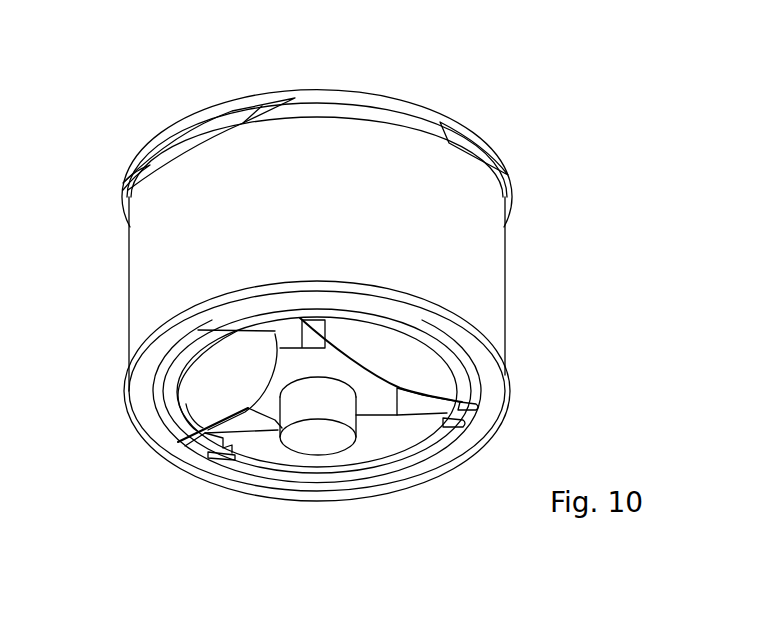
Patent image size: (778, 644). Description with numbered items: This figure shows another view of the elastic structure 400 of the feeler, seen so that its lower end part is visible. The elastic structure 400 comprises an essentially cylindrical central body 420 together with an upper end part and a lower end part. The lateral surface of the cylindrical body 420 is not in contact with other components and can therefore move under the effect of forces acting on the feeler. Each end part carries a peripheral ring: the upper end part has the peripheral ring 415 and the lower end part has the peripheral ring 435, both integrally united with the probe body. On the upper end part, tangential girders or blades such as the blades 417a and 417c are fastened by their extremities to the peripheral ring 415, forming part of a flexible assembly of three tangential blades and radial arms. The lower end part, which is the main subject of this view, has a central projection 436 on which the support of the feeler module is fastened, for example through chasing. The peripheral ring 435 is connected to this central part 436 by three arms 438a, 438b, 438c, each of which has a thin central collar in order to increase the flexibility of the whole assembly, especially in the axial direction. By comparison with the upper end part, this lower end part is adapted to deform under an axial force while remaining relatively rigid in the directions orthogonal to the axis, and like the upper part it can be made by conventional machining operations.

The elastic structure 400 is at (459, 86).
The peripheral ring 415 is at (137, 148).
The tangential blade 417a is at (452, 130).
The tangential blade 417c is at (258, 102).
The cylindrical central body 420 is at (128, 268).
The peripheral ring 435 is at (487, 434).
The central projection 436 is at (292, 458).
The arm 438a is at (205, 432).
The arm 438b is at (257, 328).
The arm 438c is at (413, 405).